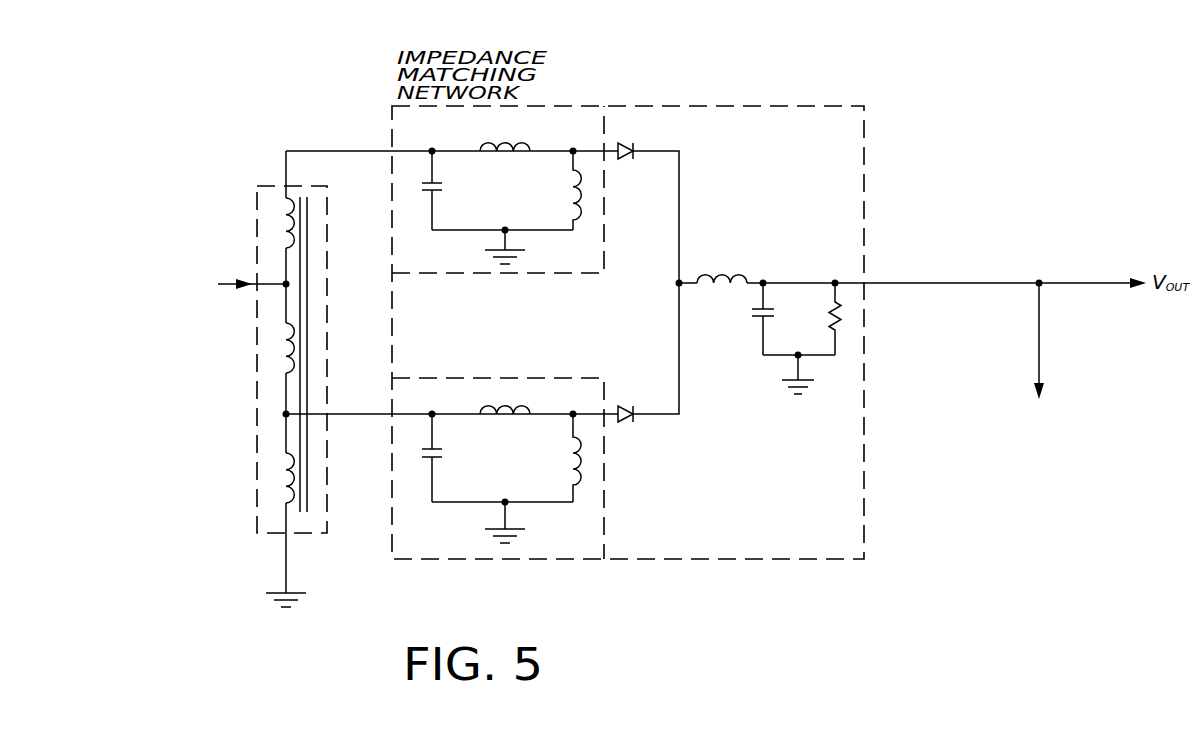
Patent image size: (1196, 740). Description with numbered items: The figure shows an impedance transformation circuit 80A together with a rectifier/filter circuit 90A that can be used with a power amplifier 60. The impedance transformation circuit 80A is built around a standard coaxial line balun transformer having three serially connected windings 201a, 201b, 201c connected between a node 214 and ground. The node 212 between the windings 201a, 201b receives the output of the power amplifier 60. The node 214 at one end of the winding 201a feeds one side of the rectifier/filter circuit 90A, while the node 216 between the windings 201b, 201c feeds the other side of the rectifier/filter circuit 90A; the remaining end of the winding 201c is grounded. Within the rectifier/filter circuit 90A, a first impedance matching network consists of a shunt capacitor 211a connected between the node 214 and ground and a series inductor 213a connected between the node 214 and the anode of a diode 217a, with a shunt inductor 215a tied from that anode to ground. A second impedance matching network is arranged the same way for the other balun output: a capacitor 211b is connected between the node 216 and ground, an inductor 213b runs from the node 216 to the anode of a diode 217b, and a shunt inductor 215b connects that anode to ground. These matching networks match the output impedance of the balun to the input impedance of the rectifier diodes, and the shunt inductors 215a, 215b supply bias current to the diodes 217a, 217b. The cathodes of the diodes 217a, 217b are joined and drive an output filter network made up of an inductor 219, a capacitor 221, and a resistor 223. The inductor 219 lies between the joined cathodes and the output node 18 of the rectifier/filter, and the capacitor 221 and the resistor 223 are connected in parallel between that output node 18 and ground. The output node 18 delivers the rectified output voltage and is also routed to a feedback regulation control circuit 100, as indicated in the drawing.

The impedance transformation circuit 80A is at (254, 198).
The node 214 is at (285, 175).
The winding 201a is at (278, 228).
The winding 201b is at (278, 364).
The winding 201c is at (278, 497).
The node 212 is at (231, 283).
The node 216 is at (284, 416).
The power amplifier 60 is at (140, 279).
The shunt capacitor 211a is at (437, 192).
The series inductor 213a is at (520, 152).
The shunt inductor 215a is at (576, 221).
The diode 217a is at (634, 146).
The capacitor 211b is at (438, 459).
The inductor 213b is at (522, 415).
The shunt inductor 215b is at (577, 488).
The diode 217b is at (629, 422).
The inductor 219 is at (735, 273).
The capacitor 221 is at (757, 318).
The resistor 223 is at (840, 333).
The output node 18 is at (1039, 280).
The feedback regulation control circuit 100 is at (1042, 454).
The rectifier/filter circuit 90A is at (788, 565).